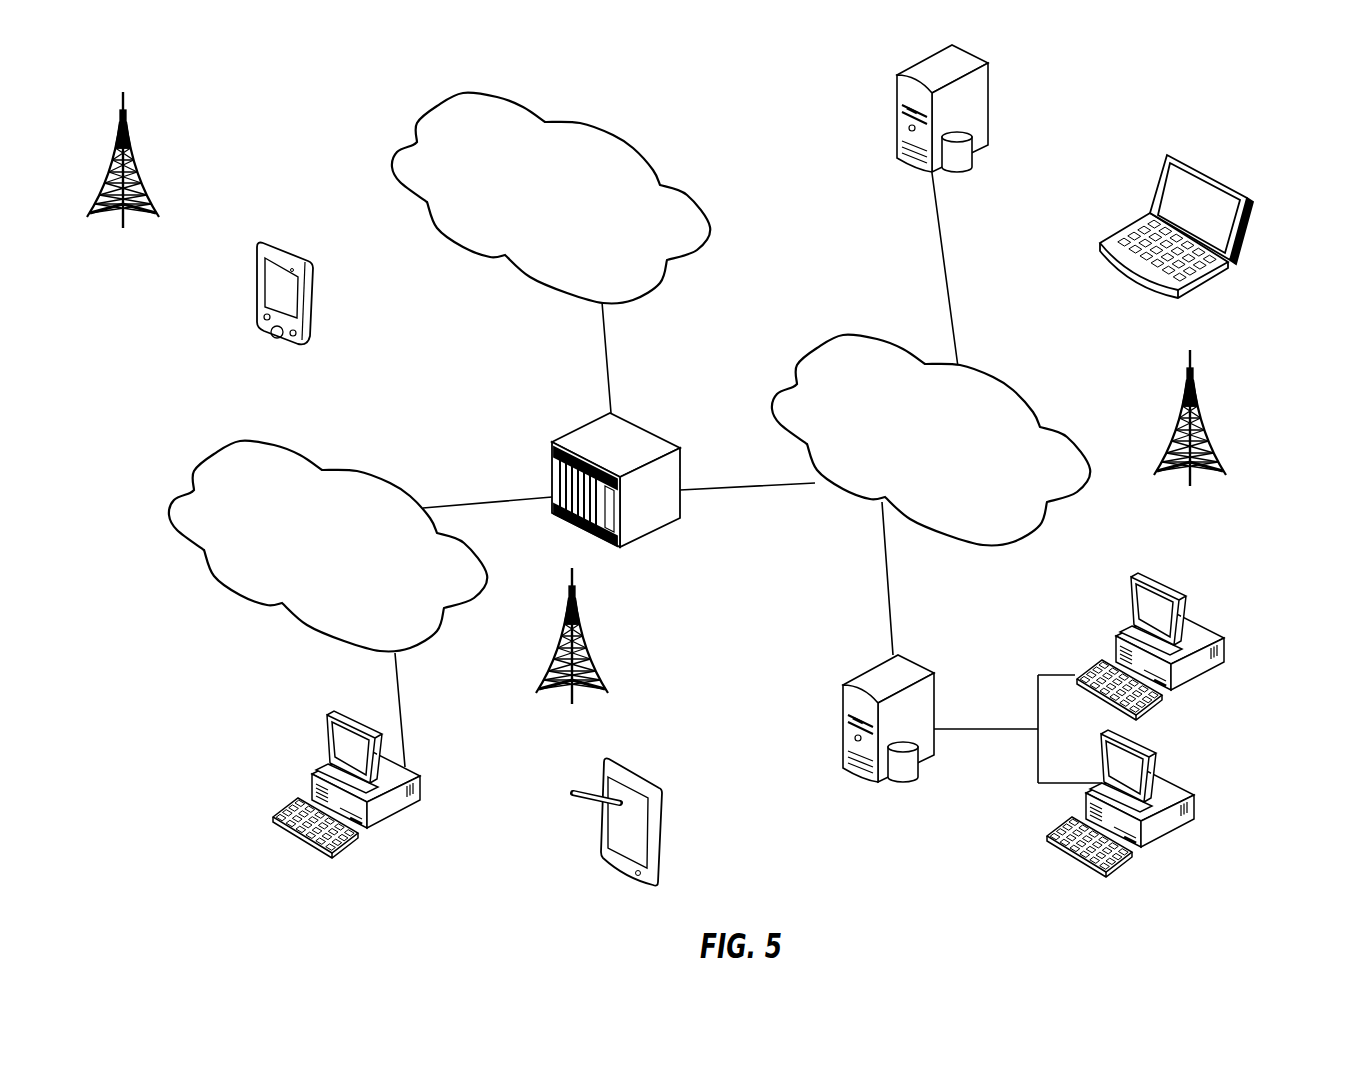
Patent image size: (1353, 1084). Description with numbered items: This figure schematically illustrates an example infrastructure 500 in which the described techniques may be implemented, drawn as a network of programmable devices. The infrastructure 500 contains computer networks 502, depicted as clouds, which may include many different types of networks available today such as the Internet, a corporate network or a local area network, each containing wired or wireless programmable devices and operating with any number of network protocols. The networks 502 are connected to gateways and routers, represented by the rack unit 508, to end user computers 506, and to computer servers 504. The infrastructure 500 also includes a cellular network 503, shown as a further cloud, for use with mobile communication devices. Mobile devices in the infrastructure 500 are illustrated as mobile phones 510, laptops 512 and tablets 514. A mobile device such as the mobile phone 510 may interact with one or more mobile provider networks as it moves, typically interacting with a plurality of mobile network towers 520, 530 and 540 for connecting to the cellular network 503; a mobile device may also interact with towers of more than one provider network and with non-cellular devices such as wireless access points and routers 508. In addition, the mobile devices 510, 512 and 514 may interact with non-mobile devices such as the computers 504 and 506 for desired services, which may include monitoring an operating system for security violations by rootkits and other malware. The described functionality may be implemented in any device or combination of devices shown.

The infrastructure 500 is at (1078, 148).
The computer networks 502 is at (305, 460).
The cellular network 503 is at (597, 128).
The computer servers 504 is at (898, 102).
The end user computers 506 is at (413, 772).
The gateways and routers 508 is at (640, 423).
The mobile phones 510 is at (293, 248).
The laptops 512 is at (1220, 180).
The tablets 514 is at (645, 777).
The mobile network tower 520 is at (572, 657).
The mobile network tower 530 is at (1190, 438).
The mobile network tower 540 is at (123, 179).